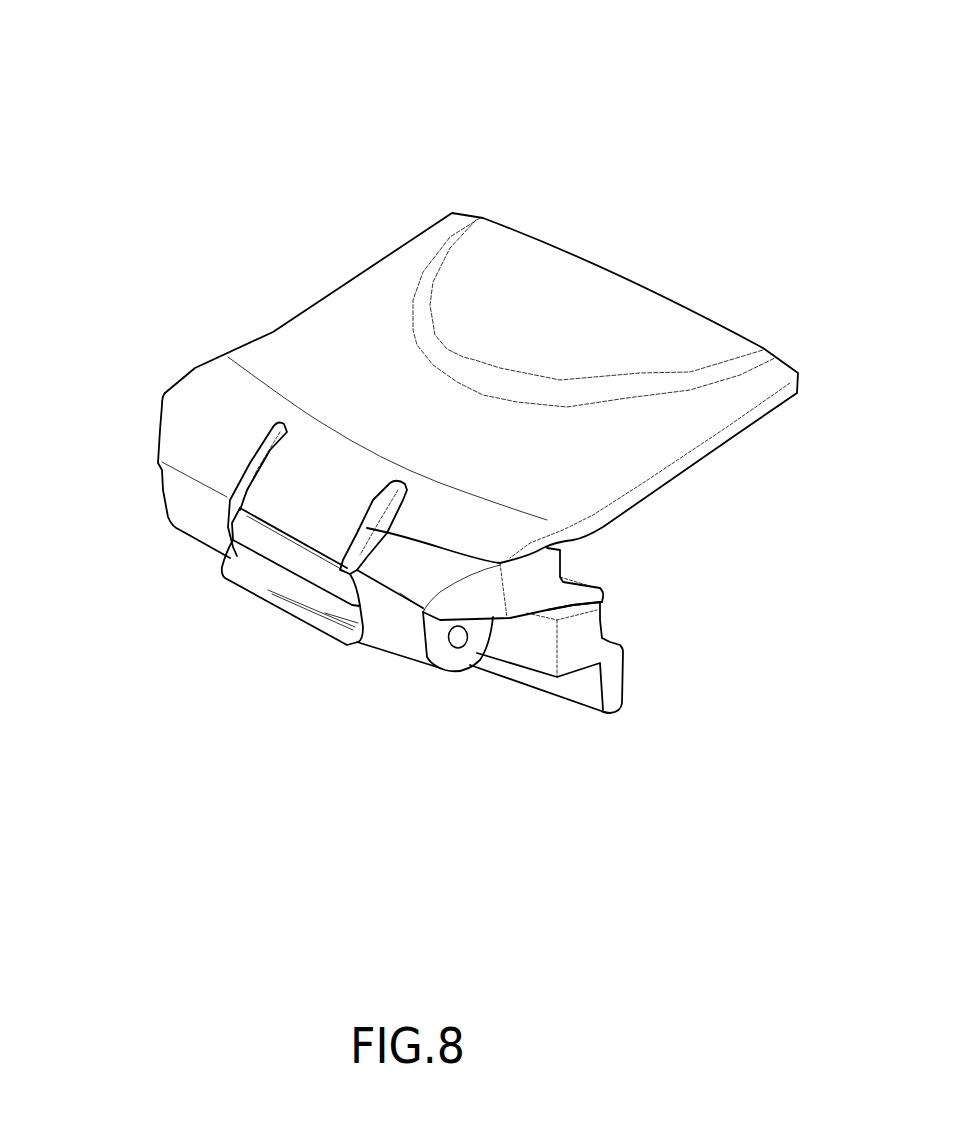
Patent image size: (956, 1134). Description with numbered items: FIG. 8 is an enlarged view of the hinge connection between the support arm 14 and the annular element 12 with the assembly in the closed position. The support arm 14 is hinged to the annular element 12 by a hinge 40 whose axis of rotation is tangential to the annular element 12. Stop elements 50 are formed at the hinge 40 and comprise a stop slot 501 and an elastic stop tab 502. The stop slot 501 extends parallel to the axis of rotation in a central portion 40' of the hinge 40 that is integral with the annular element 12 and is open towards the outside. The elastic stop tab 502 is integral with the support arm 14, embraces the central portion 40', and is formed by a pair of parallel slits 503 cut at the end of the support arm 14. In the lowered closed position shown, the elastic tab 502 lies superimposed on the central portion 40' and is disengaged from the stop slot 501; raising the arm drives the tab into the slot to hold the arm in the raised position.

The annular element 12 is at (592, 683).
The support arm 14 is at (477, 290).
The hinge 40 is at (494, 739).
The central portion of the hinge 40' is at (216, 585).
The stop elements 50 is at (253, 621).
The stop slot 501 is at (317, 600).
The elastic stop tab 502 is at (322, 497).
The parallel slits 503 is at (245, 473).